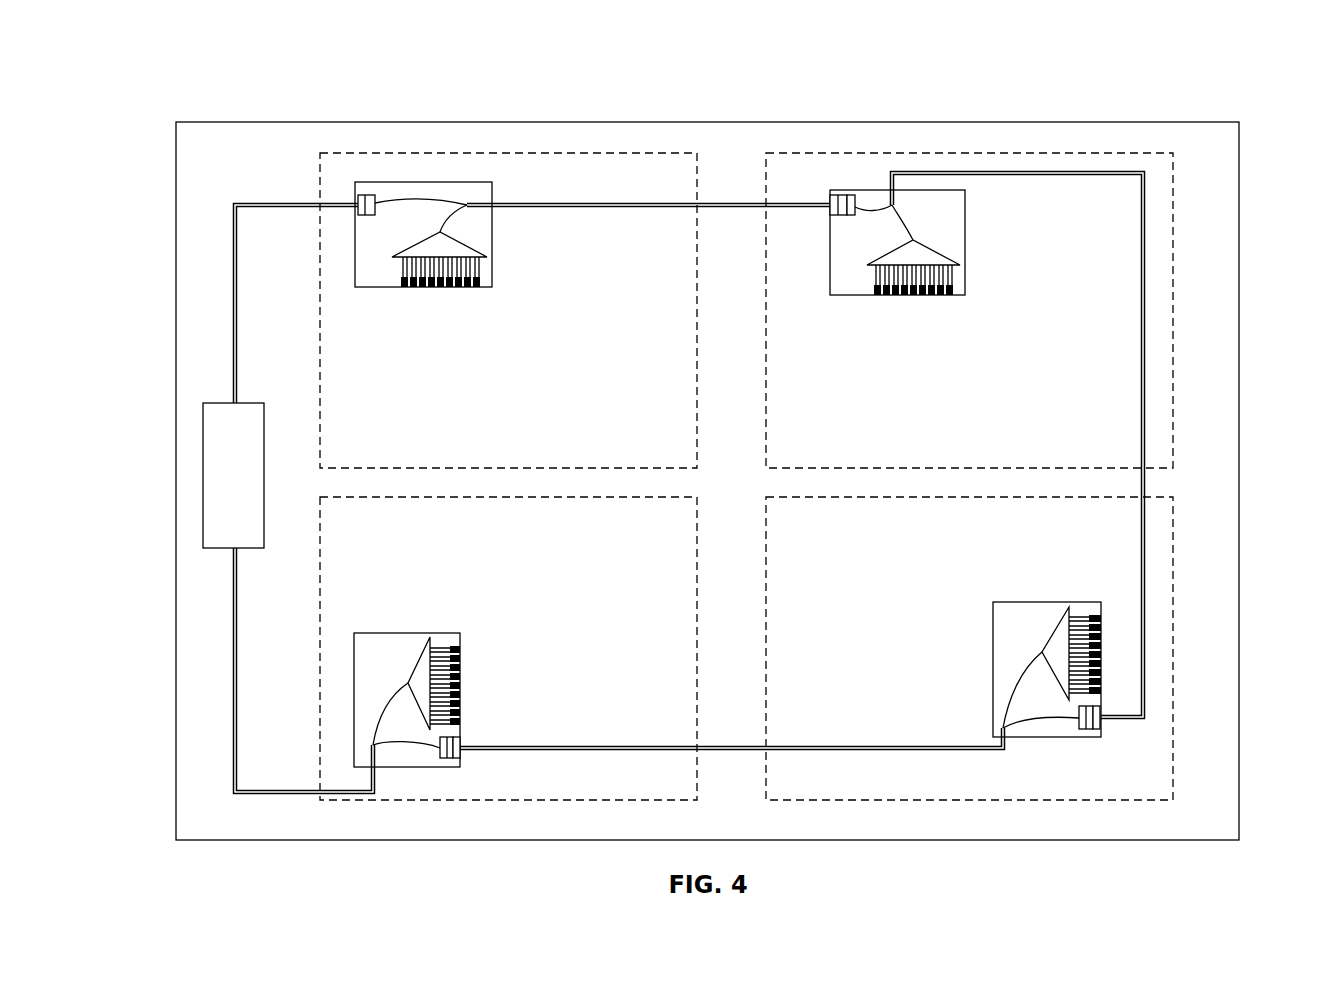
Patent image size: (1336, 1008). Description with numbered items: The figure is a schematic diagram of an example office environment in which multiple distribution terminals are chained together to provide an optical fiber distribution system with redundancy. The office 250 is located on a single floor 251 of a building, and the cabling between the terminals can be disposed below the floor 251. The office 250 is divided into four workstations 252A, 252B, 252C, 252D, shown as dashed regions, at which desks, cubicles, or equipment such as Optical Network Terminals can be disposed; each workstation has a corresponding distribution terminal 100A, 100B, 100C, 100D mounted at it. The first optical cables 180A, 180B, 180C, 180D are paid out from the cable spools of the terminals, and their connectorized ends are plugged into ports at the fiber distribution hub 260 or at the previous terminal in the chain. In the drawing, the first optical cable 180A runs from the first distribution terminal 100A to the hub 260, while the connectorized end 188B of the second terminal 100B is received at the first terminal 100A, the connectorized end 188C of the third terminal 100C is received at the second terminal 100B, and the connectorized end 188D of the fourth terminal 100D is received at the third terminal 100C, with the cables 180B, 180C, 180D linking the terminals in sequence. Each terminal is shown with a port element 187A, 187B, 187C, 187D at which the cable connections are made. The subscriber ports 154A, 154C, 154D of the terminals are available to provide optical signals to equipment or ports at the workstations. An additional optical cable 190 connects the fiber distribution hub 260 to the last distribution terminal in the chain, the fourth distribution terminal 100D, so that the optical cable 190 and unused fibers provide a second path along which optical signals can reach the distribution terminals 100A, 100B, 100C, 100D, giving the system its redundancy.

The office 250 is at (164, 60).
The floor 251 is at (1217, 457).
The optical cable 190 is at (250, 204).
The first optical cable 180A is at (262, 793).
The first optical cable 180B is at (605, 745).
The first optical cable 180C is at (1145, 375).
The first optical cable 180D is at (657, 202).
The workstation 252A is at (527, 497).
The workstation 252B is at (915, 497).
The workstation 252C is at (885, 468).
The workstation 252D is at (416, 468).
The fiber distribution hub 260 is at (256, 495).
The distribution terminal 100A is at (378, 633).
The distribution terminal 100B is at (1016, 602).
The distribution terminal 100C is at (967, 243).
The distribution terminal 100D is at (493, 247).
The subscriber ports 154A is at (462, 645).
The subscriber ports 154C is at (875, 300).
The subscriber ports 154D is at (402, 299).
The connector port 187A is at (443, 758).
The connector port 187B is at (1086, 731).
The connector port 187C is at (849, 195).
The connector port 187D is at (365, 195).
The connectorized end 188B is at (455, 758).
The connectorized end 188C is at (1093, 731).
The connectorized end 188D is at (836, 195).